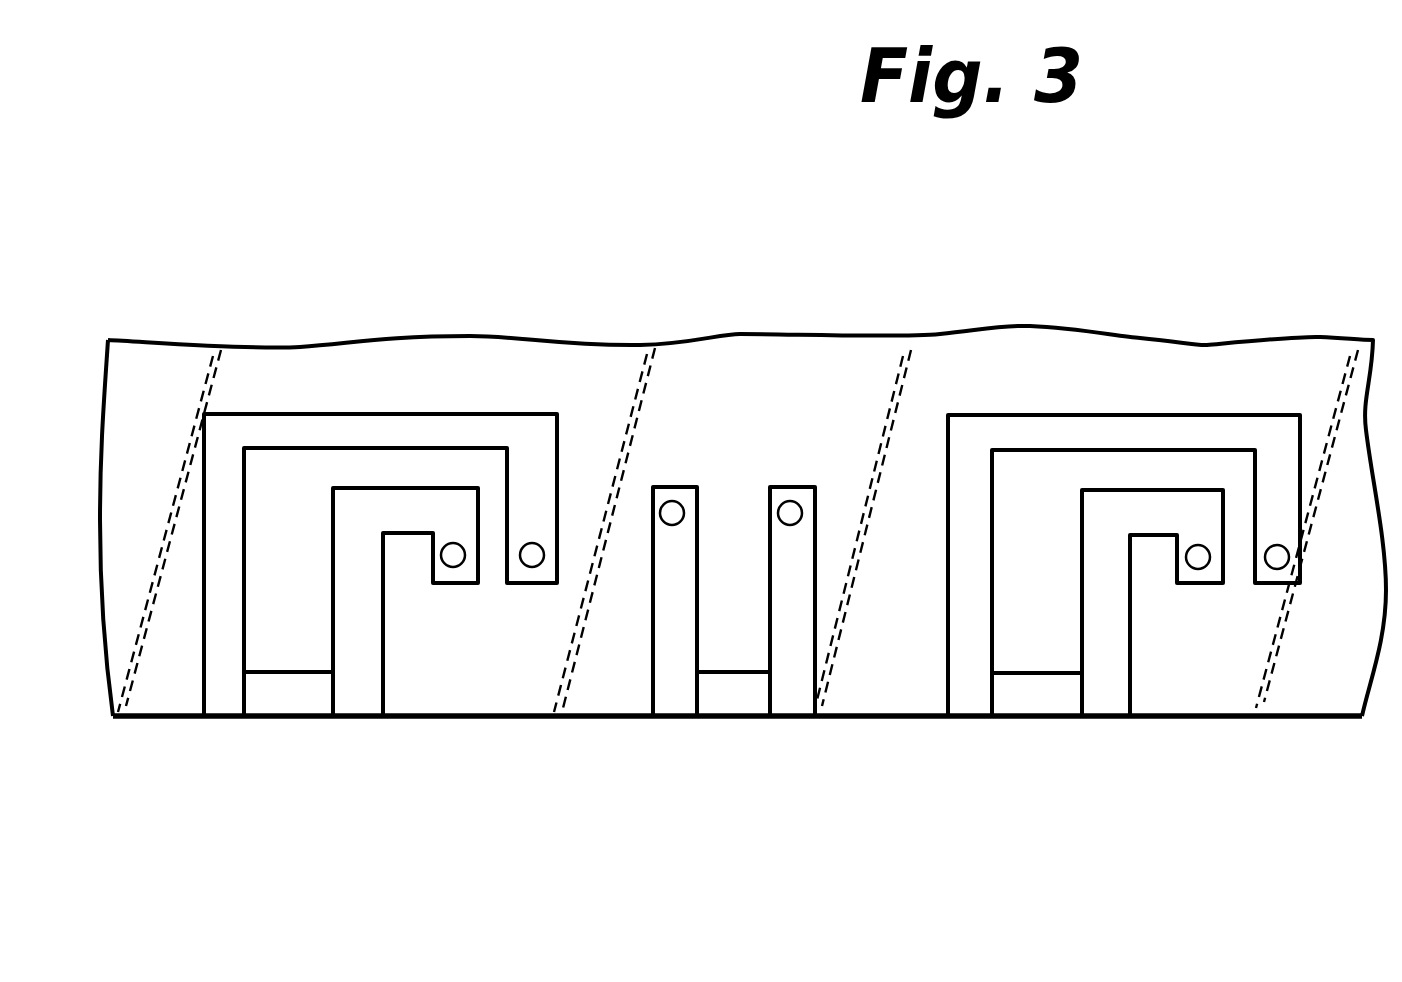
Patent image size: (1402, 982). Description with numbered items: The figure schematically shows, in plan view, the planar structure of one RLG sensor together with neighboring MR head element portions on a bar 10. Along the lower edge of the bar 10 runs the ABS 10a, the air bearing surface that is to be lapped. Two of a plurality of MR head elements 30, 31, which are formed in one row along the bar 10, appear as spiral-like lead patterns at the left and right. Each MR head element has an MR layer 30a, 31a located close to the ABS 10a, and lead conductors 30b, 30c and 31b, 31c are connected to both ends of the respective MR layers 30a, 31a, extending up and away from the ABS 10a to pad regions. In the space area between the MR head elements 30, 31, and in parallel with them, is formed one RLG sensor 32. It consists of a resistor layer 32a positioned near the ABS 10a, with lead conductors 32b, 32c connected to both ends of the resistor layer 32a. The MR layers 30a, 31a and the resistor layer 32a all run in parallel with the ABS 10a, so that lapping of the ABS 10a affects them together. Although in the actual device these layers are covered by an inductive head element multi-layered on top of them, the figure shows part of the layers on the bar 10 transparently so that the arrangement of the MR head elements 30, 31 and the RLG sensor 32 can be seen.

The bar 10 is at (1285, 372).
The ABS of the bar 10a is at (1312, 718).
The MR head element 30 is at (382, 410).
The MR layer 30a is at (288, 690).
The lead conductor 30b is at (197, 688).
The lead conductor 30c is at (377, 670).
The MR head element 31 is at (1058, 395).
The MR layer 31a is at (1035, 690).
The lead conductor 31b is at (972, 690).
The lead conductor 31c is at (1112, 690).
The RLG sensor 32 is at (717, 425).
The resistor layer 32a is at (735, 692).
The lead conductor 32b is at (665, 690).
The lead conductor 32c is at (805, 648).